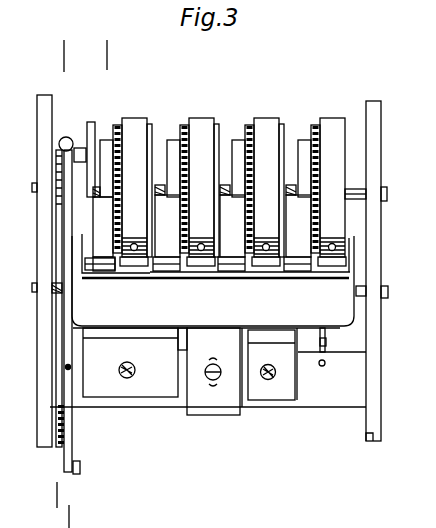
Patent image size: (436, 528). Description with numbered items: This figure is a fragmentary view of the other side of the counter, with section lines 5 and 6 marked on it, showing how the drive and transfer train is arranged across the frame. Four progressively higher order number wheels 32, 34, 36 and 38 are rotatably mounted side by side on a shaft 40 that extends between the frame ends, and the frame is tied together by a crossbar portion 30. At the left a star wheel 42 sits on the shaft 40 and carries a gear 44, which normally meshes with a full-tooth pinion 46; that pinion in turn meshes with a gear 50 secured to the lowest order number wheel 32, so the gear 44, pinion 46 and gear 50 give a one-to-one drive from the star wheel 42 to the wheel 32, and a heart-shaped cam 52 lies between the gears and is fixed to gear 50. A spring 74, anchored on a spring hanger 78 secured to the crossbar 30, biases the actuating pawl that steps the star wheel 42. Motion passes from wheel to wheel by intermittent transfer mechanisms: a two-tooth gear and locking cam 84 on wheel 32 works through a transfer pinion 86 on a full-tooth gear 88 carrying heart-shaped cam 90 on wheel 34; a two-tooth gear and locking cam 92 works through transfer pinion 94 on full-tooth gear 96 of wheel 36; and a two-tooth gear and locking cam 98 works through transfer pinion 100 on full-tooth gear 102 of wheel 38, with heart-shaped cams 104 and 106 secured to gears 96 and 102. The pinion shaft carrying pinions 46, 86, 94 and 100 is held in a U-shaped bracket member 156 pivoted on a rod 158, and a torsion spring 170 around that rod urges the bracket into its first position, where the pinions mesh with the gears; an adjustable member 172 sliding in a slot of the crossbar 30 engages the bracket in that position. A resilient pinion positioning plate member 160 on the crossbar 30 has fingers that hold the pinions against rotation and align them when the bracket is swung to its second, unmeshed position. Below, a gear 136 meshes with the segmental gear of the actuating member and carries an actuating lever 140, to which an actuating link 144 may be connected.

The section line 5- 5 is at (62, 52).
The section line 6- 6 is at (105, 52).
The crossbar portion 30 is at (341, 402).
The lowest order number wheel 32 is at (134, 124).
The number wheel 34 is at (201, 124).
The number wheel 36 is at (266, 124).
The number wheel 38 is at (337, 124).
The shaft 40 is at (385, 190).
The star wheel 42 is at (80, 148).
The gear 44 is at (91, 122).
The full-tooth pinion 46 is at (103, 266).
The gear 50 is at (116, 126).
The heart-shaped cam 52 is at (104, 141).
The spring 74 is at (60, 141).
The spring hanger 78 is at (62, 326).
The two tooth gear and locking cam 84 is at (150, 125).
The transfer pinion 86 is at (160, 243).
The full tooth gear 88 is at (184, 126).
The heart-shaped cam 90 is at (172, 141).
The two-tooth gear and locking cam 92 is at (217, 126).
The transfer pinion 94 is at (222, 240).
The full-tooth gear 96 is at (248, 126).
The two-tooth gear and locking cam 98 is at (282, 126).
The transfer pinion 100 is at (293, 240).
The full-tooth gear 102 is at (322, 126).
The heart-shaped cam 104 is at (237, 141).
The heart-shaped cam 106 is at (306, 141).
The gear 136 is at (60, 442).
The actuating lever 140 is at (72, 436).
The actuating link 144 is at (80, 470).
The U-shaped bracket member 156 is at (237, 311).
The rod 158 is at (384, 294).
The resilient pinion positioning plate member 160 is at (158, 388).
The torsion spring 170 is at (327, 343).
The adjustable member 172 is at (213, 420).